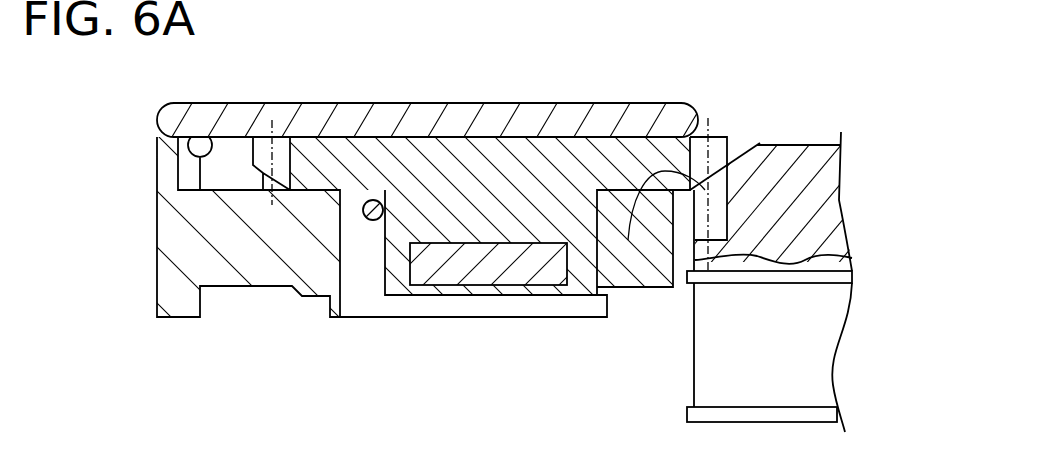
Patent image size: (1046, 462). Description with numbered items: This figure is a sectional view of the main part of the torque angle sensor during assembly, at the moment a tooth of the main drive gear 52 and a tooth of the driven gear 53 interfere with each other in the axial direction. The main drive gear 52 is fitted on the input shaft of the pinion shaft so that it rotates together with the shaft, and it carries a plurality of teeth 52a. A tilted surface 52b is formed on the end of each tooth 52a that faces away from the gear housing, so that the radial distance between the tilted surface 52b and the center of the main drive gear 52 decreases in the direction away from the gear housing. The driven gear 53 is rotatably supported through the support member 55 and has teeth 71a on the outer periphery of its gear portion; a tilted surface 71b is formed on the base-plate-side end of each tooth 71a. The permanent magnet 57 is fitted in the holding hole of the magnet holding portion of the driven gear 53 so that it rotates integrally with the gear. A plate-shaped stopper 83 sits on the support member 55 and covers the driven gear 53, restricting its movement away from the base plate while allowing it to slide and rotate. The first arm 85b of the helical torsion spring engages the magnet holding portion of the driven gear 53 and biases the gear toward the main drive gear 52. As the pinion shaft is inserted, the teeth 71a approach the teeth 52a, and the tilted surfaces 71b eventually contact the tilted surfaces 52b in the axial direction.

The main drive gear 52 is at (842, 197).
The tooth 52a is at (697, 223).
The tilted surface 52b is at (628, 240).
The driven gear 53 is at (445, 163).
The support member 55 is at (158, 237).
The permanent magnet 57 is at (485, 272).
The tooth 71a is at (727, 145).
The tilted surface 71b is at (763, 144).
The stopper 83 is at (355, 103).
The first arm 85b is at (365, 219).